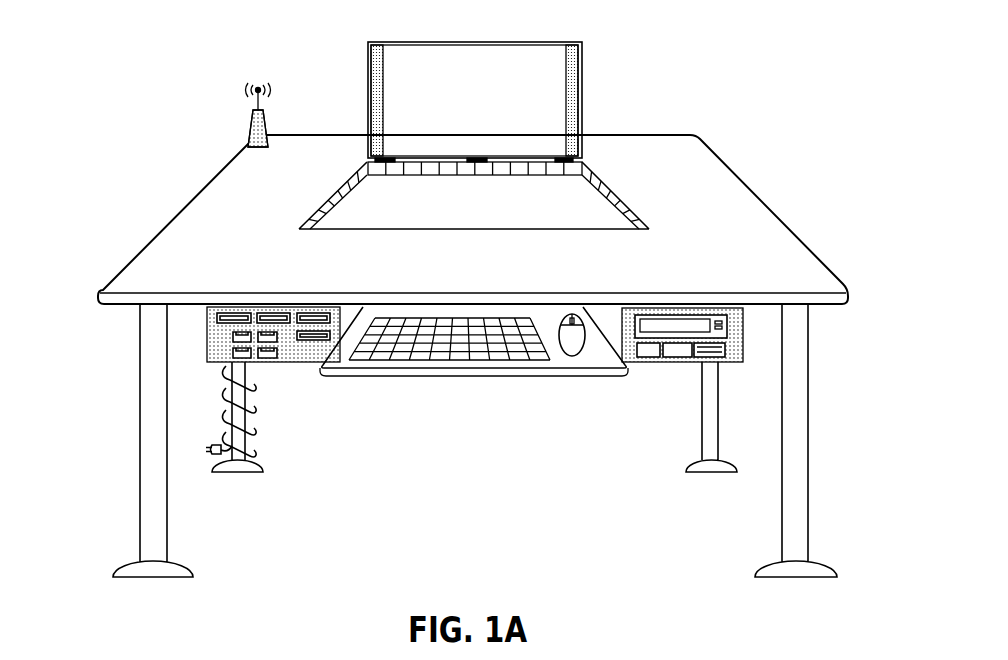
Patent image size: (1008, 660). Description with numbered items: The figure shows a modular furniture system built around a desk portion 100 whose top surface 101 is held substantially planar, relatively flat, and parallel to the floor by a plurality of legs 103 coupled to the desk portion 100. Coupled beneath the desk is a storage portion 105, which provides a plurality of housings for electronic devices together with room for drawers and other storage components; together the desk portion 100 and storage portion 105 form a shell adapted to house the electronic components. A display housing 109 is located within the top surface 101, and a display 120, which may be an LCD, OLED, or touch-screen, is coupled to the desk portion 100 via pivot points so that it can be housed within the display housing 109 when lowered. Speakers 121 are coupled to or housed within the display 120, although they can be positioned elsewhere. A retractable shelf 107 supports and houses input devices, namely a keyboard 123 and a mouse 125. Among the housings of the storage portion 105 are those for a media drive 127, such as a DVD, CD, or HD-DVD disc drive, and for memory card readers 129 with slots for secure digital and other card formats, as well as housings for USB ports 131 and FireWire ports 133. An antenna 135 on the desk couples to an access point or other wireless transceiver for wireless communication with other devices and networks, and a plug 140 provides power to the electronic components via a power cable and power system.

The desk portion 100 is at (466, 212).
The top surface 101 is at (717, 223).
The legs 103 is at (140, 500).
The storage portion 105 is at (218, 383).
The retractable shelf 107 is at (500, 416).
The display housing 109 is at (578, 188).
The display 120 is at (429, 102).
The speakers 121 is at (368, 98).
The keyboard 123 is at (447, 358).
The mouse 125 is at (570, 356).
The media drive 127 is at (764, 355).
The memory card readers 129 is at (743, 360).
The USB ports 131 is at (320, 365).
The FireWire ports 133 is at (273, 365).
The antenna 135 is at (245, 83).
The plug 140 is at (208, 445).